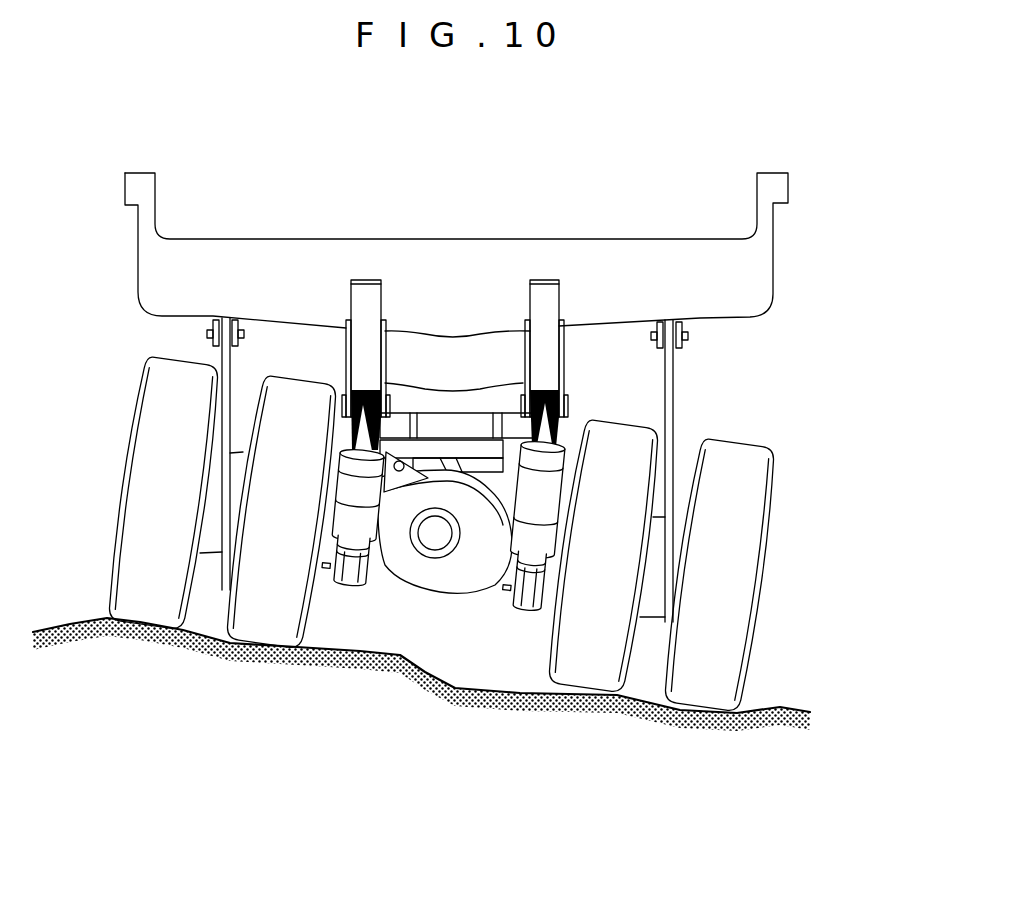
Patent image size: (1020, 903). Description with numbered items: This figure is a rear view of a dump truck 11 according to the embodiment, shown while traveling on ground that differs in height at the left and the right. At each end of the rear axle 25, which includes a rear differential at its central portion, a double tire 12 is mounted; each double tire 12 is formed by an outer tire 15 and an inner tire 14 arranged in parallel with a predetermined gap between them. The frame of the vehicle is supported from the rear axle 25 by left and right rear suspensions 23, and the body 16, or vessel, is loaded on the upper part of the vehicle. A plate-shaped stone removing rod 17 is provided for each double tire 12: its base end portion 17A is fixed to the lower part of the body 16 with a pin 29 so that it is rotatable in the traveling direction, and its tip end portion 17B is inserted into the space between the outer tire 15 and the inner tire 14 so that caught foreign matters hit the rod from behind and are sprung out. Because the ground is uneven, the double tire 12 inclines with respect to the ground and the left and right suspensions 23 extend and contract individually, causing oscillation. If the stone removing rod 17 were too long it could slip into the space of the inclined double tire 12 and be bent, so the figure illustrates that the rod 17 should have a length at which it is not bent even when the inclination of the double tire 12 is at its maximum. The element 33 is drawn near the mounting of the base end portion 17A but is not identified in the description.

The dump truck 11 is at (823, 222).
The double tire 12 is at (130, 703).
The inner tire 14 is at (252, 628).
The outer tire 15 is at (147, 612).
The body 16 is at (780, 263).
The stone removing rod 17 is at (222, 440).
The base end portion 17A is at (226, 320).
The tip end portion 17B is at (222, 585).
The rear suspension 23 is at (375, 578).
The rear axle 25 is at (430, 568).
The pin 29 is at (207, 334).
The bracket plate 33 is at (244, 330).